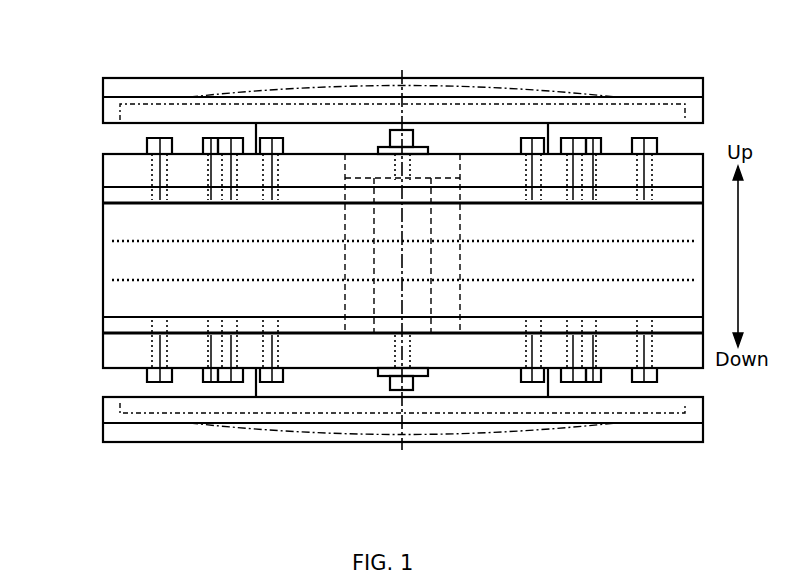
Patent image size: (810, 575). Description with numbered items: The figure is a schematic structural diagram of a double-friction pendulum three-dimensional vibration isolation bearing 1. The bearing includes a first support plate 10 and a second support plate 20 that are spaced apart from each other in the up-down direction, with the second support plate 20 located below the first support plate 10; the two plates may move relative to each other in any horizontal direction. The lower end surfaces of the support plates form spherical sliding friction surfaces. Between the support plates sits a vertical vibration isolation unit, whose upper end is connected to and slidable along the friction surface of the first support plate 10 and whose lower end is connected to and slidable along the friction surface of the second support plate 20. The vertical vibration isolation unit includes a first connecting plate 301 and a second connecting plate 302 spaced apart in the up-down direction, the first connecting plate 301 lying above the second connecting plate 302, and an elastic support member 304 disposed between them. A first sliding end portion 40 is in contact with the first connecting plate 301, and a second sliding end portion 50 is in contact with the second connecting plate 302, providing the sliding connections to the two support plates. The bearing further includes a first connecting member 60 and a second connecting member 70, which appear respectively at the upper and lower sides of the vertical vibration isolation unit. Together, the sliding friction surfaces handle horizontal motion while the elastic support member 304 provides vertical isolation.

The double-friction pendulum three-dimensional vibration isolation bearing 1 is at (68, 47).
The first support plate 10 is at (212, 88).
The second support plate 20 is at (160, 430).
The first sliding end portion 40 is at (470, 130).
The second sliding end portion 50 is at (457, 380).
The first connecting member 60 is at (147, 143).
The second connecting member 70 is at (150, 375).
The first connecting plate 301 is at (118, 192).
The second connecting plate 302 is at (120, 325).
The elastic support member 304 is at (125, 261).